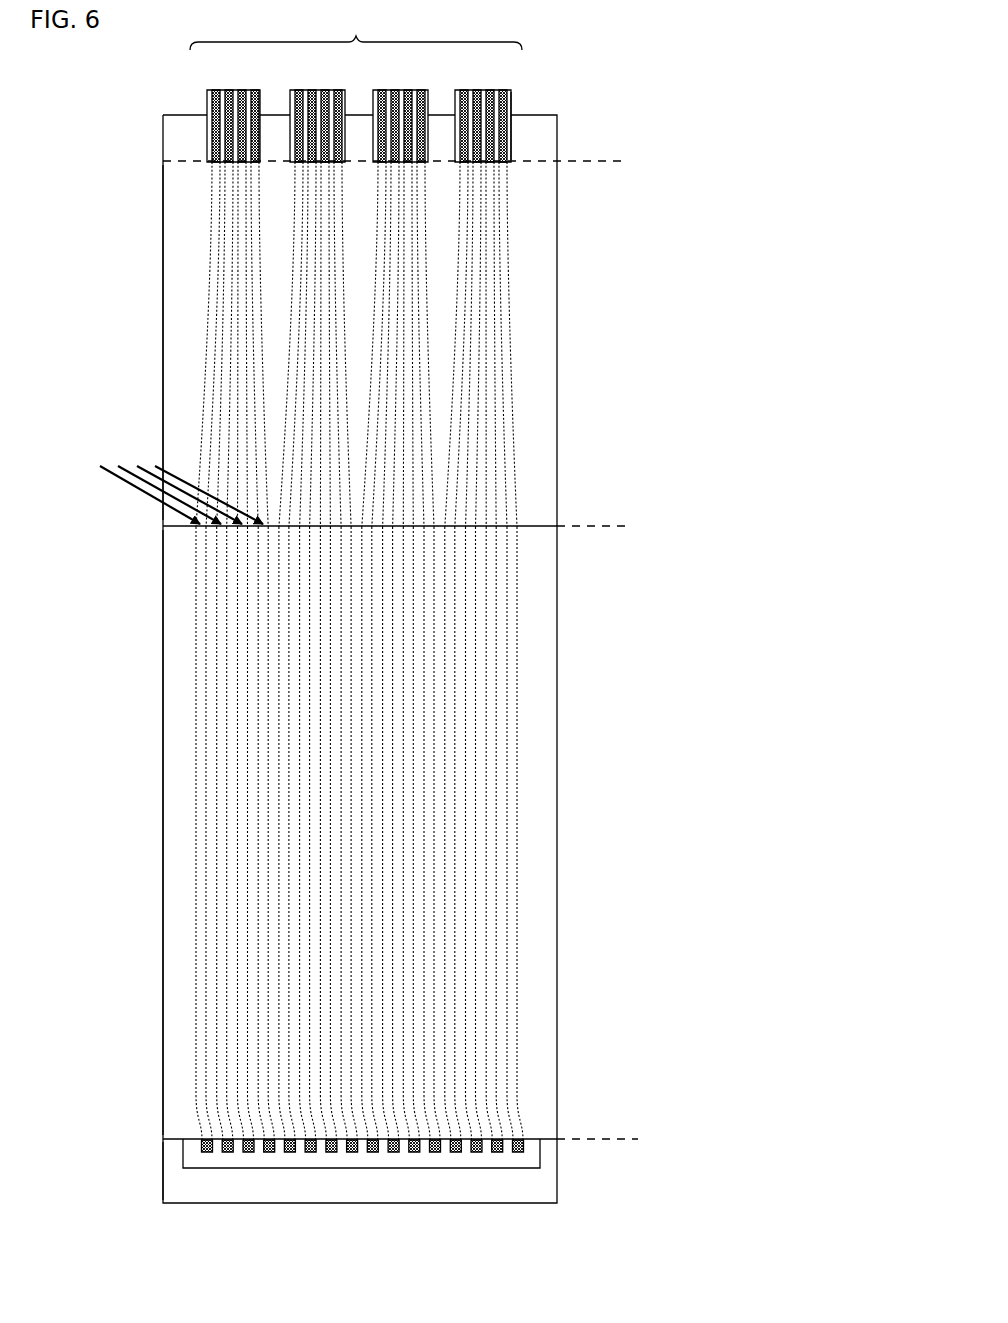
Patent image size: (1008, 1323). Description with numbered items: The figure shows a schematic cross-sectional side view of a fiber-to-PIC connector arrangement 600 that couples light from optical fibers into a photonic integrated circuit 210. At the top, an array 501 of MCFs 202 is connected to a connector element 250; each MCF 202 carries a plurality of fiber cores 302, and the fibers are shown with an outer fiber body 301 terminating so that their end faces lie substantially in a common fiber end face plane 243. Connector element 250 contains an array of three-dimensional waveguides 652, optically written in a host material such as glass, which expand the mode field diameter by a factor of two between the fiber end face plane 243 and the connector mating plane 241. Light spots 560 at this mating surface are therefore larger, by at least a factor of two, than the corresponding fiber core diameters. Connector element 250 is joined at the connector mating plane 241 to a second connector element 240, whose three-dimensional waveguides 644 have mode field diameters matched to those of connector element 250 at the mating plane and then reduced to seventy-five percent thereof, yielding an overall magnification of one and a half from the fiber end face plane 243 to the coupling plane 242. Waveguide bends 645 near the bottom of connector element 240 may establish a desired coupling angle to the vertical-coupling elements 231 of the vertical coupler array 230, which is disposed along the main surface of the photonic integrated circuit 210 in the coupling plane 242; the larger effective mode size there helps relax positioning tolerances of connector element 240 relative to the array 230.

The fiber-to-PIC connector arrangement 600 is at (86, 81).
The array of MCFs 501 is at (356, 28).
The MCF 202 is at (455, 90).
The fiber core 302 is at (514, 77).
The light source housing 301 is at (511, 102).
The fiber end face plane 243 is at (627, 161).
The connector element 250 is at (178, 216).
The 3D waveguides 652 is at (508, 357).
The light spots 560 is at (181, 482).
The connector mating plane 241 is at (632, 526).
The connector element 240 is at (178, 563).
The 3D waveguides 644 is at (512, 665).
The waveguide bends 645 is at (515, 1120).
The coupling plane 242 is at (638, 1139).
The photonic integrated circuit 210 is at (178, 1182).
The vertical coupler array 230 is at (533, 1158).
The vertical-coupling element 231 is at (250, 1152).